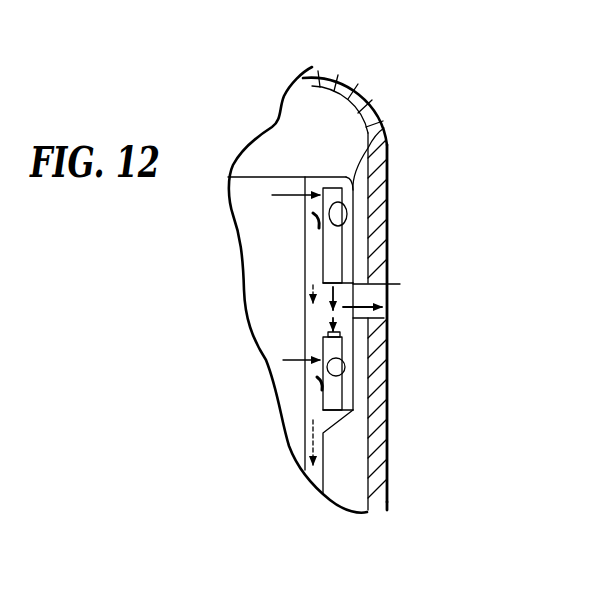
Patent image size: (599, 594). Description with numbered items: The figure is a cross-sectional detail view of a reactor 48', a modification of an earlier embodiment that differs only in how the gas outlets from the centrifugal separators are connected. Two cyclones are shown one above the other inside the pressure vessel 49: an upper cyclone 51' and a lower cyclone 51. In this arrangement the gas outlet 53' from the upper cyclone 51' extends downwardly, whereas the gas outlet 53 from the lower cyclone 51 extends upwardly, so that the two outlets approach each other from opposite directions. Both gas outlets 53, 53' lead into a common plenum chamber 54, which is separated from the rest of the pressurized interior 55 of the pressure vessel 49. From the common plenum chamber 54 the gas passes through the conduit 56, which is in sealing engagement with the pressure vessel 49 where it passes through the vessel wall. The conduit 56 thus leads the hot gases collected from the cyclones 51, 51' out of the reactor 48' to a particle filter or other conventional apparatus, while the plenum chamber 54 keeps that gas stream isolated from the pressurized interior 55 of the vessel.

The reactor 48' is at (430, 418).
The pressure vessel 49 is at (378, 482).
The lower cyclone 51 is at (401, 321).
The upper cyclone 51' is at (371, 130).
The gas outlet 53 is at (277, 364).
The gas outlet 53' is at (376, 243).
The common plenum chamber 54 is at (325, 312).
The pressurized interior 55 is at (350, 452).
The conduit 56 is at (384, 346).